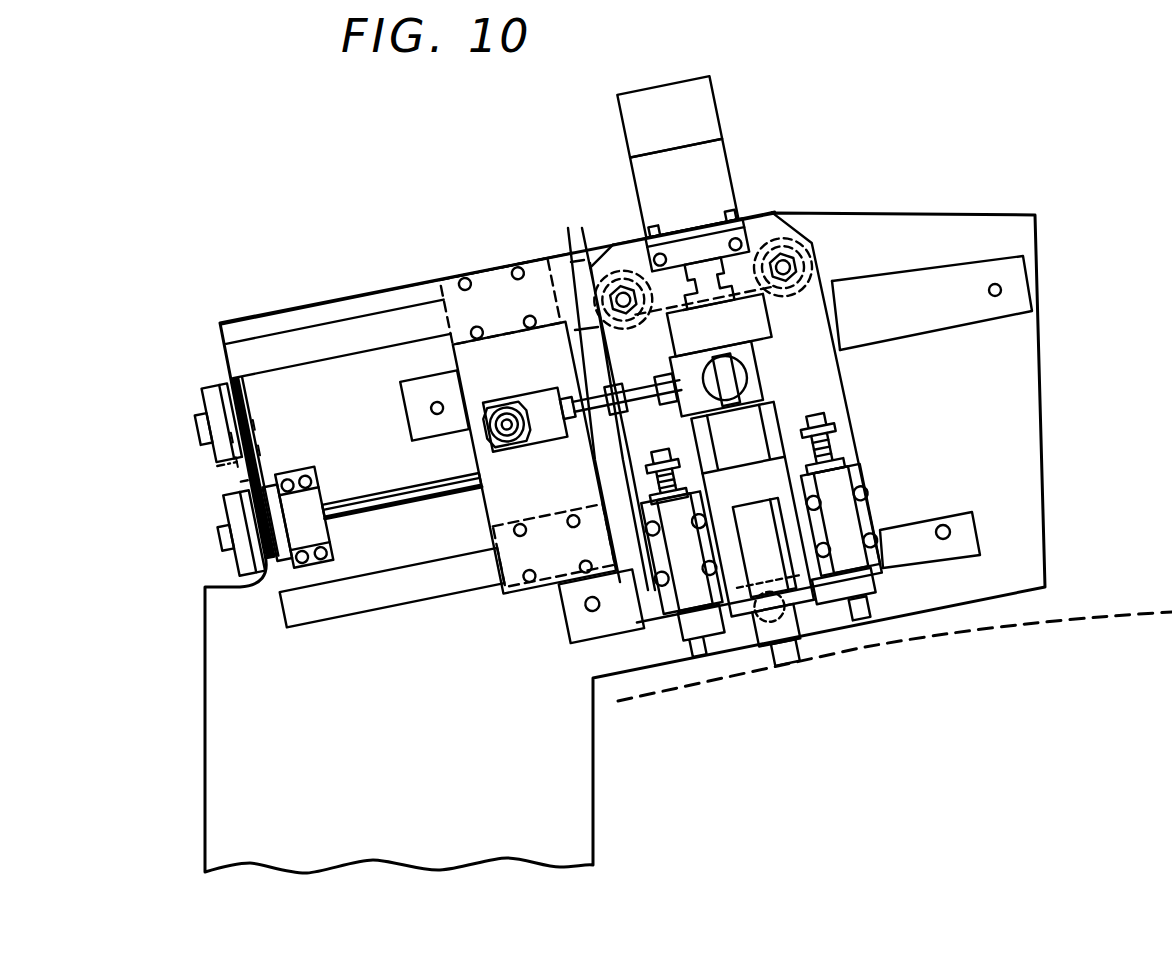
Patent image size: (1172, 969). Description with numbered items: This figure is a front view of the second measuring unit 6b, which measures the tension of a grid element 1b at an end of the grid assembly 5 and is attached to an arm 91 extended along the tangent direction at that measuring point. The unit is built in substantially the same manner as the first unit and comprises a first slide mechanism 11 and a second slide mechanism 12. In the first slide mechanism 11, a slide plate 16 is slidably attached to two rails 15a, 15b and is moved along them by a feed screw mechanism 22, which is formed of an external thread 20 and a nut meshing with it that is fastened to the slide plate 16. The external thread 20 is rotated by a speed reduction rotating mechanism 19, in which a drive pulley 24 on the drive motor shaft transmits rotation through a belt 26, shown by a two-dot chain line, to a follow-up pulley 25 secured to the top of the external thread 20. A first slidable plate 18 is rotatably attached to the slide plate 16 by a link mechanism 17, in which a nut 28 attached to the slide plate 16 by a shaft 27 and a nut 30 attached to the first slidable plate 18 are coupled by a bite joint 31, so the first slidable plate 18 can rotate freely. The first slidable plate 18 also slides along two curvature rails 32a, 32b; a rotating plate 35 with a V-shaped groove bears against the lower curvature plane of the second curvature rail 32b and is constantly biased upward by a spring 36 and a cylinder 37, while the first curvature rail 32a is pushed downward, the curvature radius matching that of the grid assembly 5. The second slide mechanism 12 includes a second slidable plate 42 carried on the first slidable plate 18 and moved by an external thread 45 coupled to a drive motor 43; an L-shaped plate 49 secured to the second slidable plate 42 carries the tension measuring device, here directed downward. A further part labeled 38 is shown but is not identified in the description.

The grid element 1b is at (787, 663).
The grid assembly 5 is at (1030, 640).
The second measuring unit 6b is at (946, 100).
The first slide mechanism 11 is at (362, 286).
The second slide mechanism 12 is at (800, 318).
The rail 15a is at (300, 345).
The rail 15b is at (322, 615).
The slide plate 16 is at (450, 355).
The link mechanism 17 is at (620, 372).
The first slidable plate 18 is at (835, 378).
The speed reduction rotating mechanism 19 is at (205, 470).
The external thread 20 is at (372, 500).
The feed screw mechanism 22 is at (438, 512).
The drive pulley 24 is at (258, 548).
The follow-up pulley 25 is at (218, 392).
The belt 26 is at (215, 490).
The shaft 27 is at (507, 430).
The nut 28 is at (540, 420).
The nut 30 is at (675, 375).
The bite joint 31 is at (618, 412).
The first curvature rail 32a is at (980, 280).
The second curvature rail 32b is at (963, 542).
The rotating plate 35 is at (762, 643).
The spring 36 is at (862, 437).
The cylinder 37 is at (847, 512).
The slide block 38 is at (300, 505).
The second slidable plate 42 is at (765, 608).
The drive motor 43 is at (720, 153).
The external thread 45 is at (745, 385).
The L-shaped plate 49 is at (830, 633).
The arm 91 is at (595, 836).